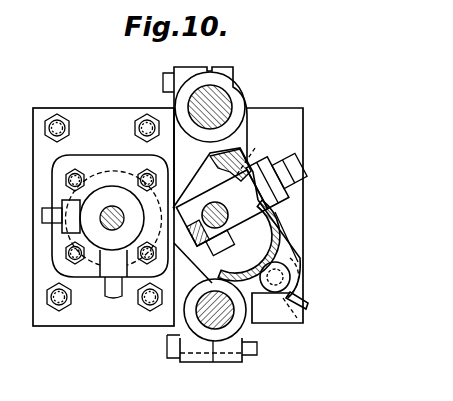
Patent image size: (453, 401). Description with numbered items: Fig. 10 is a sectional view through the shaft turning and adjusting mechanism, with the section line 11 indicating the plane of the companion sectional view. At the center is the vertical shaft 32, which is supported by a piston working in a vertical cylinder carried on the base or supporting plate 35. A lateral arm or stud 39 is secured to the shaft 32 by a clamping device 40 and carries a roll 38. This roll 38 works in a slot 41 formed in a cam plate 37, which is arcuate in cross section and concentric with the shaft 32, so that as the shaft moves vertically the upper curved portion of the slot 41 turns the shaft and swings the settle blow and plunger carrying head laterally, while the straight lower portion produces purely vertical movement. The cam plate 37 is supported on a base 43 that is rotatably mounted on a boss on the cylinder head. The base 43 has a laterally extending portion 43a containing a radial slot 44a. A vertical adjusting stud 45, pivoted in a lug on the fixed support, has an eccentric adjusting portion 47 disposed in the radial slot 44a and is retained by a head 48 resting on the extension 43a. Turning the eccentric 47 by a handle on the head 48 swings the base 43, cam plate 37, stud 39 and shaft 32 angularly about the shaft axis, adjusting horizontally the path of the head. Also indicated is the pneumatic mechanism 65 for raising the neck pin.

The section line 11— 11 is at (205, 212).
The vertical shaft 32 is at (228, 202).
The supporting plate 35 is at (105, 120).
The cam plate 37 is at (283, 214).
The roll 38 is at (266, 196).
The lateral arm or stud 39 is at (255, 148).
The clamping device 40 is at (181, 207).
The slot 41 is at (242, 166).
The base 43 is at (212, 265).
The laterally extending portion 43a is at (283, 254).
The radial slot 44a is at (292, 273).
The vertical adjusting stud 45 is at (300, 280).
The eccentric adjusting portion 47 is at (298, 320).
The head 48 is at (275, 293).
The pneumatic mechanism 65 is at (80, 146).